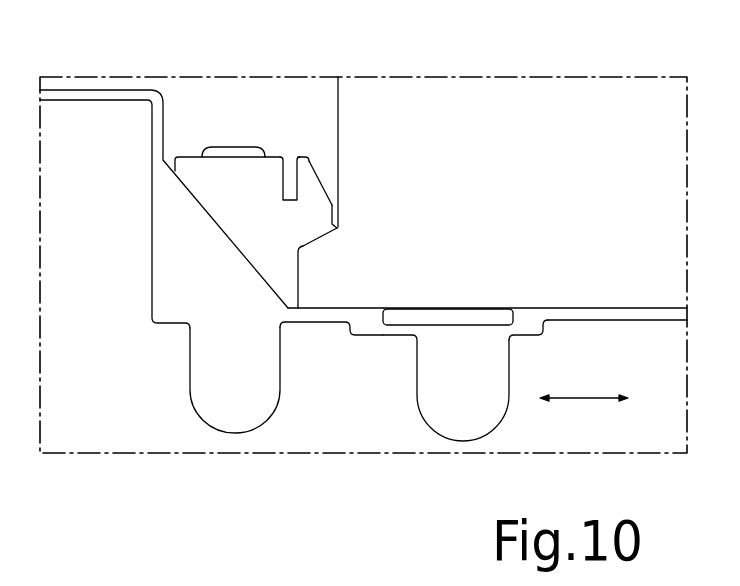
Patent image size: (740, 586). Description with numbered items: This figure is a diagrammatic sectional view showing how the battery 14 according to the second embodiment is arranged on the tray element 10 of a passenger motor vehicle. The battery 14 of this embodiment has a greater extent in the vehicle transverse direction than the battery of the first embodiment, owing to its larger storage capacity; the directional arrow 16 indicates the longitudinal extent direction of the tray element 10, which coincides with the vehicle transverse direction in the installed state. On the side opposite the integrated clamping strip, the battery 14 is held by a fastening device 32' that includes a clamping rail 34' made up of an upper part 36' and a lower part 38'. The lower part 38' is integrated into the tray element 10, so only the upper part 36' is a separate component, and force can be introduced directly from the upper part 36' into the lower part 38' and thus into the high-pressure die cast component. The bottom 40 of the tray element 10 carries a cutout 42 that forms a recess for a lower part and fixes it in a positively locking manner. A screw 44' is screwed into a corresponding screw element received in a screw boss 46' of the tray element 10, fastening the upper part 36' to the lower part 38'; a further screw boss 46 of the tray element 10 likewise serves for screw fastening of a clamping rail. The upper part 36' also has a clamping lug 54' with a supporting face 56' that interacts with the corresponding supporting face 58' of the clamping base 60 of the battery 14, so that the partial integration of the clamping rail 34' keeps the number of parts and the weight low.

The tray element 10 is at (529, 345).
The battery 14 is at (554, 100).
The directional arrow 16 is at (592, 398).
The fastening device 32' is at (242, 99).
The clamping rail 34' is at (357, 152).
The upper part 36' is at (300, 145).
The lower part 38' is at (164, 209).
The bottom 40 is at (590, 317).
The cutout 42 is at (469, 313).
The screw 44' is at (218, 204).
The screw boss 46 is at (446, 420).
The screw boss 46' is at (182, 380).
The clamping lug 54' is at (387, 203).
The supporting face 56' is at (362, 255).
The supporting face 58' is at (261, 249).
The clamping base 60 is at (330, 288).